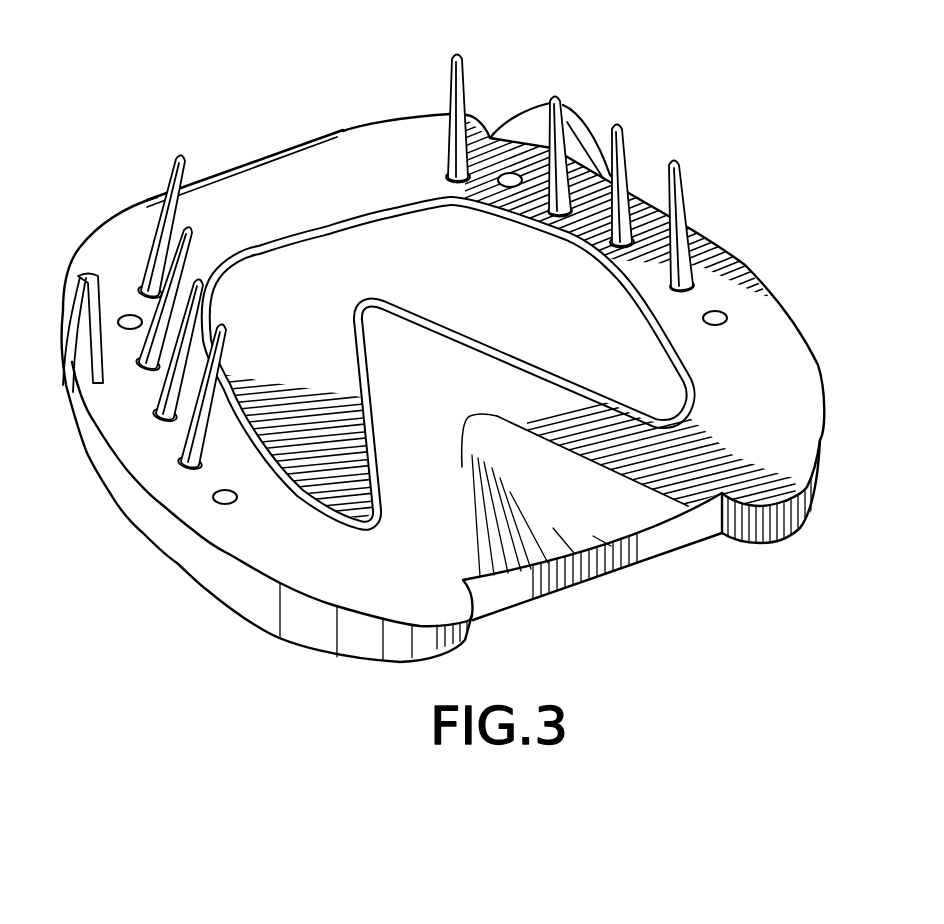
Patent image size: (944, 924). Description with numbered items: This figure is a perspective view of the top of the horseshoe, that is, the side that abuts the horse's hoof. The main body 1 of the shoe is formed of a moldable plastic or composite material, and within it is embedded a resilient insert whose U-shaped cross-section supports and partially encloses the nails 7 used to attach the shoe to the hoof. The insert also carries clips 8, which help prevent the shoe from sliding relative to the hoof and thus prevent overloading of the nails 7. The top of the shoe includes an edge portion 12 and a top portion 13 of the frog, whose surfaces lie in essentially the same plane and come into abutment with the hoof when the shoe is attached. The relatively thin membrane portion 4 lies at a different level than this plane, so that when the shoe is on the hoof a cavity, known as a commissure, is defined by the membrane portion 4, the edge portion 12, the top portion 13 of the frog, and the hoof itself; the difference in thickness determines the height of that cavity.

The main body 1 is at (340, 182).
The membrane portion 4 is at (433, 268).
The nails 7 is at (172, 187).
The clips 8 is at (587, 125).
The edge portion 12 is at (733, 392).
The top portion of the frog 13 is at (594, 424).